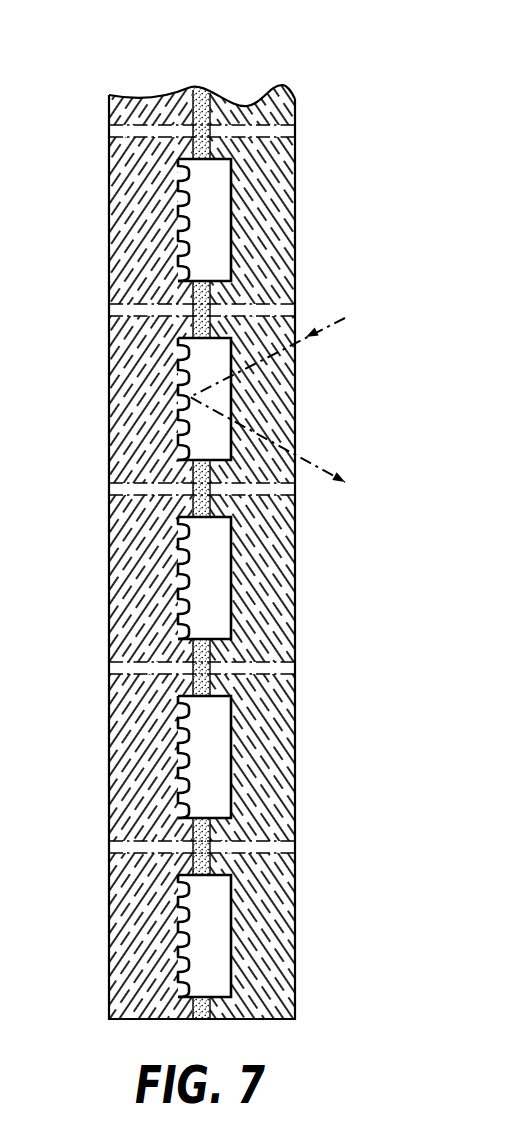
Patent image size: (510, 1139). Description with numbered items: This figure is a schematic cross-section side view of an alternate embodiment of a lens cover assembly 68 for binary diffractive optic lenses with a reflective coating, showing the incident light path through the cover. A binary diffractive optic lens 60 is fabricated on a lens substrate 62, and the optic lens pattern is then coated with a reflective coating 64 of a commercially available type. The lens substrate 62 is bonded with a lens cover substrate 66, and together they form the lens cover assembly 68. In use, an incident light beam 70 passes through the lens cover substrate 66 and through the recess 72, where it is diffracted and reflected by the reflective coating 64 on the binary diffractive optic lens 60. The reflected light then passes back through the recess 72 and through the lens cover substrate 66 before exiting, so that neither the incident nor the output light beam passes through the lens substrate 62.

The binary diffractive optic lens 60 is at (165, 188).
The lens substrate 62 is at (118, 265).
The reflective coating 64 is at (177, 173).
The lens cover substrate 66 is at (285, 197).
The lens cover assembly 68 is at (258, 57).
The incident light beam 70 is at (282, 389).
The recess 72 is at (215, 182).